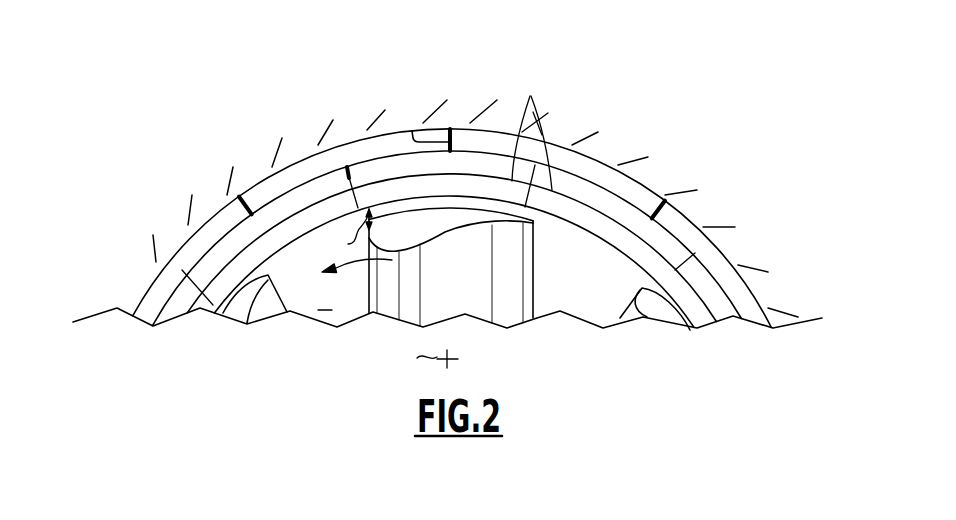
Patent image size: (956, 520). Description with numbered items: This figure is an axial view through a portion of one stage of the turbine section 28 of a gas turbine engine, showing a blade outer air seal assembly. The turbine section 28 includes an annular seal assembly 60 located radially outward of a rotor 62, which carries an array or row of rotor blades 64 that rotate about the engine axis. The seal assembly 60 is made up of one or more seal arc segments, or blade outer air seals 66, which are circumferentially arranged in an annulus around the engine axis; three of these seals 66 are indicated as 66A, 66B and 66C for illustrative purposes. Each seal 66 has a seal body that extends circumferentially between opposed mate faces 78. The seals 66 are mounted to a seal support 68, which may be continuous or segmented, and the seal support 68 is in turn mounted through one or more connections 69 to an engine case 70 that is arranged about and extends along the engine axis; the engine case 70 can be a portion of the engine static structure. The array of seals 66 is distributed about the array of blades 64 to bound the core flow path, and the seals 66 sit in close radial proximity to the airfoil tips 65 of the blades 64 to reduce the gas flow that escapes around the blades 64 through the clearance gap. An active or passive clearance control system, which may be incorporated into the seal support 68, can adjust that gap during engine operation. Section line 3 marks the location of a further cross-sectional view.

The turbine section 28 is at (161, 55).
The seal assembly 60 is at (339, 67).
The rotor 62 is at (263, 334).
The rotor blades 64 is at (366, 303).
The airfoil tips 65 is at (233, 305).
The blade outer air seals 66 is at (530, 96).
The first seal arc segment 66A is at (229, 275).
The second seal arc segment 66B is at (388, 188).
The third seal arc segment 66C is at (667, 293).
The seal support 68 is at (480, 152).
The connections 69 is at (412, 131).
The engine case 70 is at (693, 226).
The mate faces 78 is at (352, 201).
The section line 3 is at (695, 166).